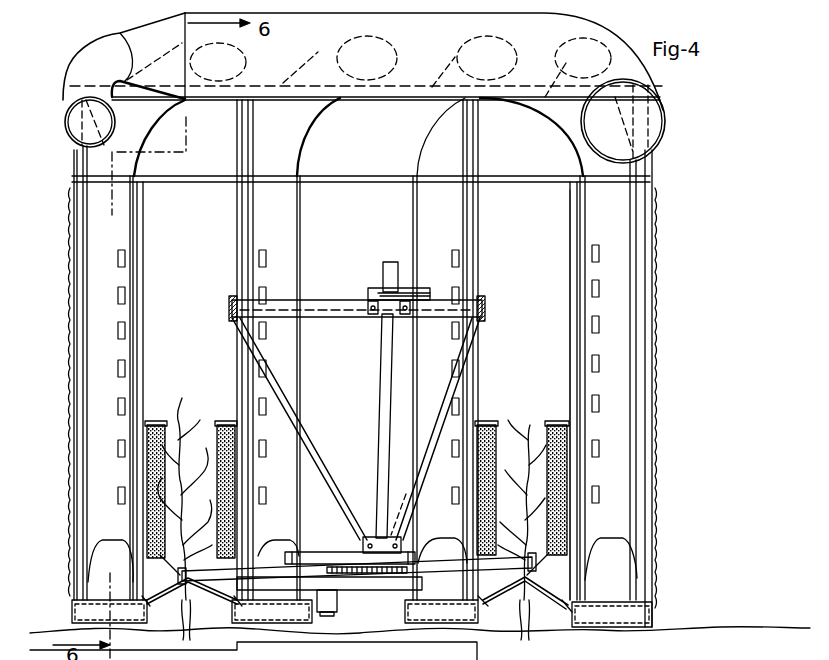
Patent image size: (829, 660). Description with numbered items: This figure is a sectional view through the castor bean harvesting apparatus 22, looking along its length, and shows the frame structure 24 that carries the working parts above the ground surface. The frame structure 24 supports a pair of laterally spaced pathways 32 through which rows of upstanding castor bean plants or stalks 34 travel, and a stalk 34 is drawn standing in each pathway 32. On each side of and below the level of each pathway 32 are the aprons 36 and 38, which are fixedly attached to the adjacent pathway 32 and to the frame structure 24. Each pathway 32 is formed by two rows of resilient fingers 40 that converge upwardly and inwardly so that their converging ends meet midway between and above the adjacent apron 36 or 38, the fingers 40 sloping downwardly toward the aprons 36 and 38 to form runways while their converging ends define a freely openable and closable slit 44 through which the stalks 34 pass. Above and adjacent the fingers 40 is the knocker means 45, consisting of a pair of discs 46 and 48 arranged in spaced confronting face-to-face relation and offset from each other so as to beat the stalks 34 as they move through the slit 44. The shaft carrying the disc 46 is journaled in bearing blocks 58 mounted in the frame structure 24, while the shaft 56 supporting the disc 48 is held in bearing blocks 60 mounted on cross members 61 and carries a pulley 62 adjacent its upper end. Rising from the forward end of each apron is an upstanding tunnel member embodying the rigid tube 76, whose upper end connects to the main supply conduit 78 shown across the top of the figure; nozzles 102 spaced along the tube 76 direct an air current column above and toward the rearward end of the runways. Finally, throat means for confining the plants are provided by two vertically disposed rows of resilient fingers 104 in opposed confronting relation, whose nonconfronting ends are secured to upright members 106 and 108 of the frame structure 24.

The castor bean harvesting apparatus 22 is at (668, 186).
The frame structure 24 is at (491, 253).
The pathways 32 is at (175, 632).
The castor bean plants or stalks 34 is at (184, 418).
The apron 36 is at (614, 602).
The apron 38 is at (78, 605).
The resilient fingers 40 is at (551, 614).
The slit 44 is at (528, 622).
The knocker means 45 is at (367, 502).
The disc 46 is at (260, 548).
The disc 48 is at (308, 548).
The shaft 56 is at (382, 406).
The bearing blocks 58 is at (340, 615).
The bearing blocks 60 is at (382, 314).
The cross members 61 is at (335, 306).
The pulley 62 is at (372, 286).
The rigid tube 76 is at (585, 164).
The main supply conduit 78 is at (572, 30).
The nozzles 102 is at (600, 284).
The resilient fingers 104 is at (562, 425).
The upright member 106 is at (478, 378).
The upright member 108 is at (576, 330).